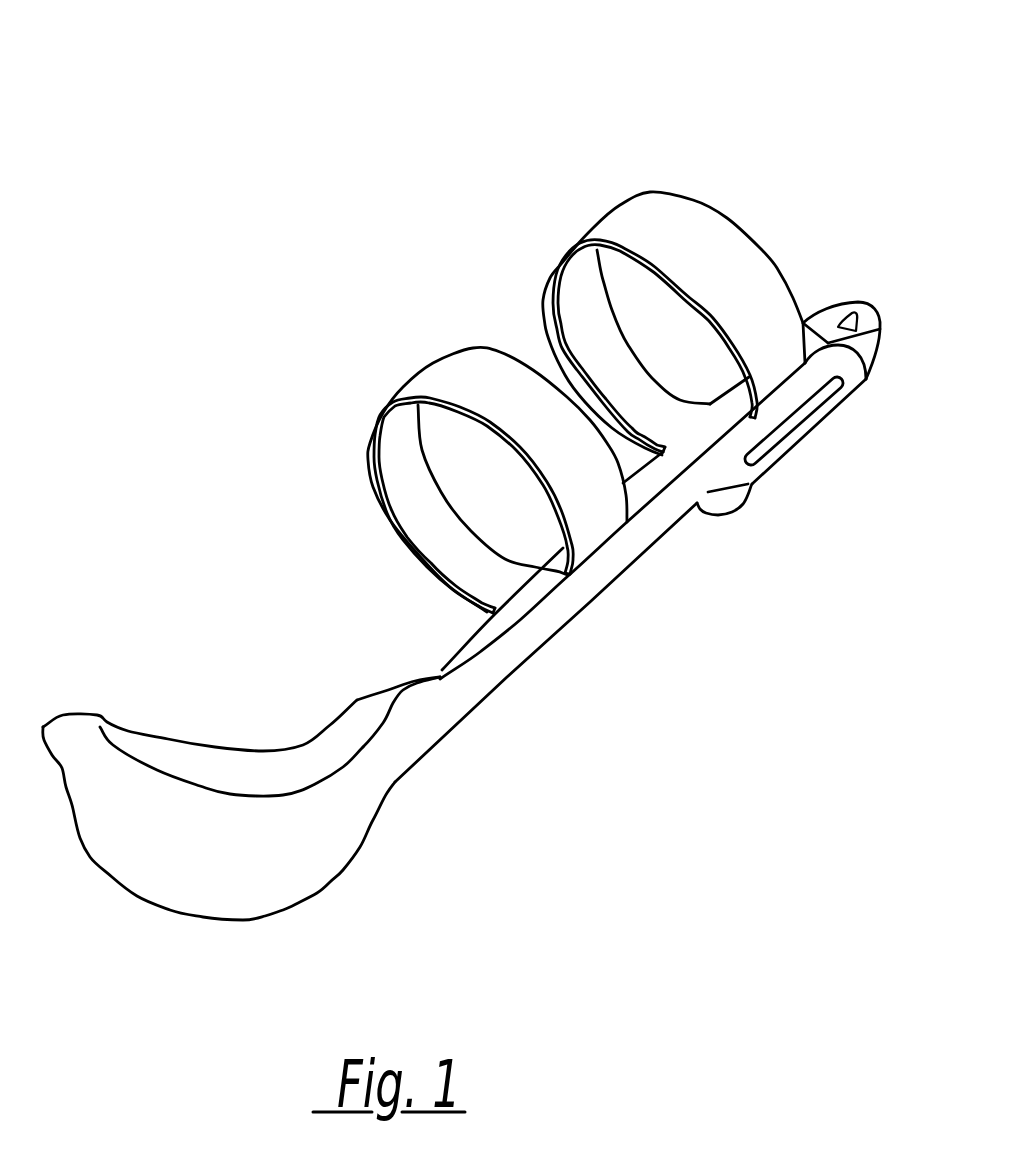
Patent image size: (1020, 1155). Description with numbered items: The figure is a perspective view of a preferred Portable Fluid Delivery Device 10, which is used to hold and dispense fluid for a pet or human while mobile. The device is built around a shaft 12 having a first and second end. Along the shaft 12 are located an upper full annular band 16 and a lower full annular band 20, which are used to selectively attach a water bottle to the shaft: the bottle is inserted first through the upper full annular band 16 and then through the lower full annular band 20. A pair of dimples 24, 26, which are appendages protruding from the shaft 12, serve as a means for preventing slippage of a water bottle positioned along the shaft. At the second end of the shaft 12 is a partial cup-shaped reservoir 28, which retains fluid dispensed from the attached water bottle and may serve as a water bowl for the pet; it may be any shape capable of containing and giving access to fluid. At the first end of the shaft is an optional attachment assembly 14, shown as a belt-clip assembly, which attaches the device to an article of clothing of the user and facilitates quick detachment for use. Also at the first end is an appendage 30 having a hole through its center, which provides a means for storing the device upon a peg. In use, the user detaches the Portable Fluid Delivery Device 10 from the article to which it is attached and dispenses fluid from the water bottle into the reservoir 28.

The Portable Fluid Delivery Device 10 is at (655, 124).
The shaft 12 is at (547, 625).
The attachment assembly 14 is at (817, 418).
The upper full annular band 16 is at (582, 233).
The lower full annular band 20 is at (403, 387).
The dimple 24 is at (357, 700).
The dimple 26 is at (405, 705).
The reservoir 28 is at (110, 848).
The appendage 30 is at (828, 301).